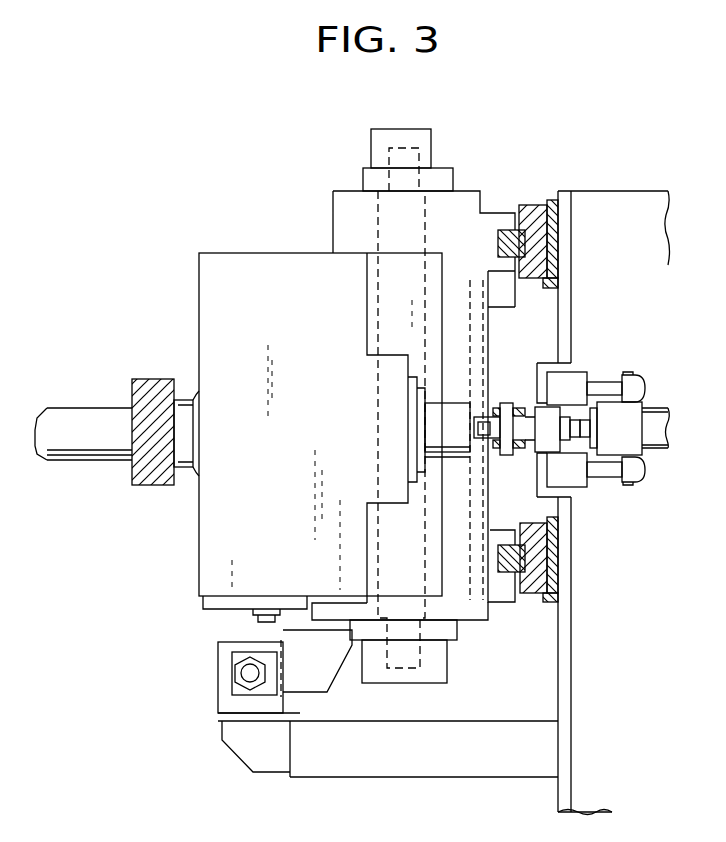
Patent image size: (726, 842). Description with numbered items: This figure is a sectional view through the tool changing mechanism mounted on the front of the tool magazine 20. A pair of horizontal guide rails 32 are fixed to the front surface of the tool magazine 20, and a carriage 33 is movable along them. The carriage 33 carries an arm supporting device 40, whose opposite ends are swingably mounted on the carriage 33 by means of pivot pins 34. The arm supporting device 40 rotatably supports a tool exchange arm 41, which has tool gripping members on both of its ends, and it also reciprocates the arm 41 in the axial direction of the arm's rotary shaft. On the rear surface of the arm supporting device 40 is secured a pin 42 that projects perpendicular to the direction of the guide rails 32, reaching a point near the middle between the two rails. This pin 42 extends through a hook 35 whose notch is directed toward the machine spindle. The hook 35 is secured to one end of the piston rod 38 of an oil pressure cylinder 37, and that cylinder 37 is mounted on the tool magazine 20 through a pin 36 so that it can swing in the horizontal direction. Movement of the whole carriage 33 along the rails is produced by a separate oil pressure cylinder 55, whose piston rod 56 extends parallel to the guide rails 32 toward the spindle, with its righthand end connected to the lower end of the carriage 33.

The tool magazine 20 is at (568, 215).
The horizontal guide rails 32 is at (520, 222).
The carriage 33 is at (469, 206).
The pivot pins 34 is at (425, 213).
The hook 35 is at (528, 427).
The pin 36 is at (643, 398).
The oil pressure cylinder 37 is at (658, 412).
The piston rod 38 is at (575, 420).
The arm supporting device 40 is at (279, 263).
The tool exchange arm 41 is at (149, 382).
The pin 42 is at (503, 404).
The oil pressure cylinder 55 is at (223, 667).
The piston rod 56 is at (242, 682).